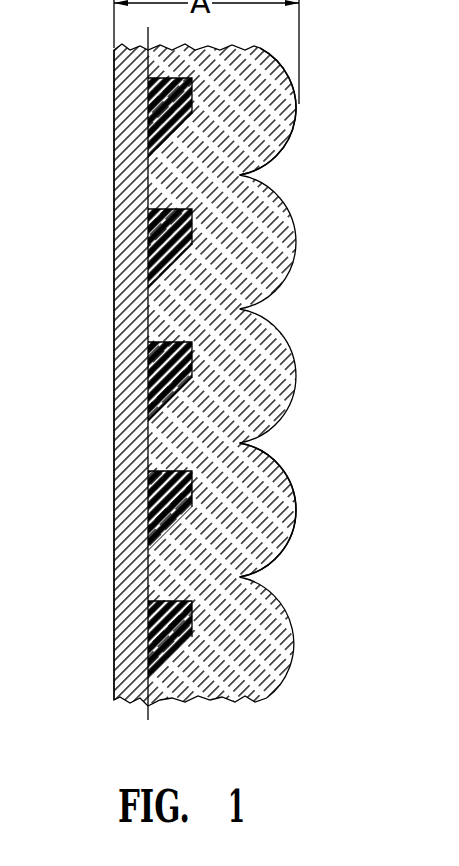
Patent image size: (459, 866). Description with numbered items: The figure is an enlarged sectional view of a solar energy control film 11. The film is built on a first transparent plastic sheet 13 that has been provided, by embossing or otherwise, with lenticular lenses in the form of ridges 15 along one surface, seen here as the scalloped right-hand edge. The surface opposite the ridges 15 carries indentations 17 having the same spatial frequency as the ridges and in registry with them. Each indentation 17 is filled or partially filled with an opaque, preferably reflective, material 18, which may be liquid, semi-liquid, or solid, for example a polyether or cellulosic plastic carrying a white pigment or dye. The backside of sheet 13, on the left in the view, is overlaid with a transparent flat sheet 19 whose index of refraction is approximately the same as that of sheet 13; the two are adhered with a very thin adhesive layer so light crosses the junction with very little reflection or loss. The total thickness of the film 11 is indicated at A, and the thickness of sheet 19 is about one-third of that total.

The solar energy control film 11 is at (296, 204).
The first transparent plastic sheet 13 is at (293, 108).
The ridges 15 is at (266, 436).
The indentations 17 is at (176, 342).
The opaque material 18 is at (146, 381).
The transparent flat sheet 19 is at (120, 193).